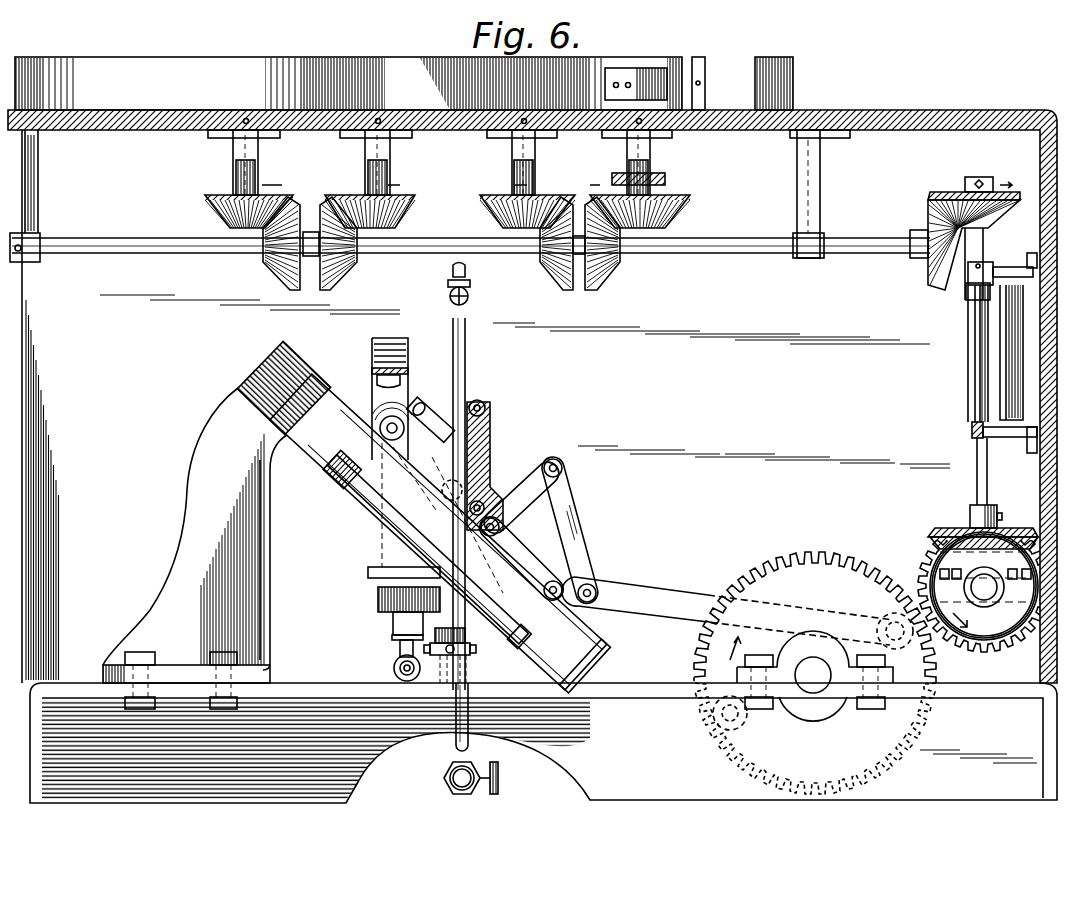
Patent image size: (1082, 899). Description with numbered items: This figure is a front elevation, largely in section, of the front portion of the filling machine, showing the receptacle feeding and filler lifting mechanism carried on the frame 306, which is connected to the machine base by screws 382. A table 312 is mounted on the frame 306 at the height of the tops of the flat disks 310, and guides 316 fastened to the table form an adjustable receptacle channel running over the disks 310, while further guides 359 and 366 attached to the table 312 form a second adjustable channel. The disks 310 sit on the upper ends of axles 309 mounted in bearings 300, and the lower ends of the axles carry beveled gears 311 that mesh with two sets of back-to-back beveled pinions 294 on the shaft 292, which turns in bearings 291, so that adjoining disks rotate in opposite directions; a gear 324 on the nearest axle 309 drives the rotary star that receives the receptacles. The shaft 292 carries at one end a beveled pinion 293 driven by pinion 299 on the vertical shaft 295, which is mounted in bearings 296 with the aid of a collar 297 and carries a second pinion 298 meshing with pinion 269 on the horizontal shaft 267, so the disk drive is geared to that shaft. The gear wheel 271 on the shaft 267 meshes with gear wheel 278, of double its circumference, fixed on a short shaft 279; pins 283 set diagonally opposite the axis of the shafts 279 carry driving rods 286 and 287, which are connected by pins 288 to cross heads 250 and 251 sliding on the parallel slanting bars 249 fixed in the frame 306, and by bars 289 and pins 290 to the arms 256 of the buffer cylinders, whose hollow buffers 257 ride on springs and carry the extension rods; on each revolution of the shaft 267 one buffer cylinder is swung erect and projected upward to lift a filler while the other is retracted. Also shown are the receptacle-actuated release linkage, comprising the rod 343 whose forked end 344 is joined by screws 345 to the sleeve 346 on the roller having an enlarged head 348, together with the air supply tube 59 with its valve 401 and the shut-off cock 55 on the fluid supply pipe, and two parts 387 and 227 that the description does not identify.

The guides 316 is at (118, 78).
The flat disks 310 is at (290, 108).
The bracket 387 is at (627, 66).
The guide 359 is at (699, 58).
The guide 366 is at (762, 57).
The table 312 is at (870, 110).
The bearings 300 is at (260, 159).
The axles 309 is at (235, 177).
The gear 324 is at (666, 179).
The beveled gears 311 is at (672, 206).
The beveled pinions 294 is at (298, 290).
The shaft 292 is at (715, 252).
The bearings 291 is at (35, 262).
The pinion 299 is at (945, 192).
The beveled pinion 293 is at (935, 292).
The collar 297 is at (985, 263).
The vertical shaft 295 is at (985, 358).
The bearings 296 is at (975, 300).
The frame 306 is at (1030, 445).
The screws 382 is at (205, 652).
The pinion 298 is at (935, 527).
The gear wheel 271 is at (925, 556).
The pinion 269 is at (977, 630).
The horizontal shaft 267 is at (990, 598).
The gear wheel 278 is at (812, 536).
The short shafts 279 is at (810, 692).
The pins 283 is at (893, 650).
The driving rod 287 is at (665, 586).
The bars 289 is at (575, 510).
The pins 288 is at (577, 609).
The pins 290 is at (486, 412).
The driving rod 286 is at (597, 650).
The parallel slanting bars 249 is at (318, 426).
The cross head 250 is at (345, 479).
The cross head 251 is at (522, 646).
The air supply tube 59 is at (468, 383).
The valve 401 is at (471, 296).
The arms 256 is at (417, 402).
The hollow buffers 257 is at (444, 409).
The screws 345 is at (395, 649).
The roller 227 is at (393, 669).
The enlarged head 348 is at (438, 630).
The rod 343 is at (472, 649).
The sleeve 346 is at (470, 661).
The forked end 344 is at (433, 661).
The shut-off cock 55 is at (499, 782).